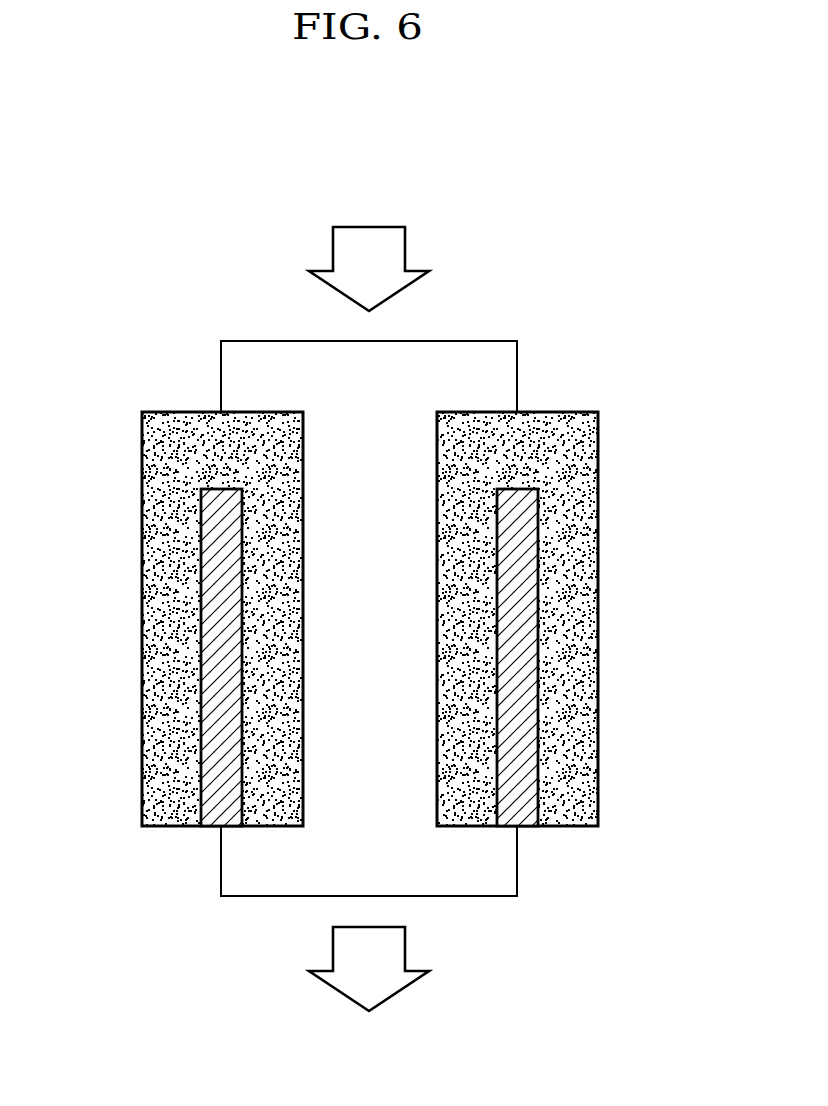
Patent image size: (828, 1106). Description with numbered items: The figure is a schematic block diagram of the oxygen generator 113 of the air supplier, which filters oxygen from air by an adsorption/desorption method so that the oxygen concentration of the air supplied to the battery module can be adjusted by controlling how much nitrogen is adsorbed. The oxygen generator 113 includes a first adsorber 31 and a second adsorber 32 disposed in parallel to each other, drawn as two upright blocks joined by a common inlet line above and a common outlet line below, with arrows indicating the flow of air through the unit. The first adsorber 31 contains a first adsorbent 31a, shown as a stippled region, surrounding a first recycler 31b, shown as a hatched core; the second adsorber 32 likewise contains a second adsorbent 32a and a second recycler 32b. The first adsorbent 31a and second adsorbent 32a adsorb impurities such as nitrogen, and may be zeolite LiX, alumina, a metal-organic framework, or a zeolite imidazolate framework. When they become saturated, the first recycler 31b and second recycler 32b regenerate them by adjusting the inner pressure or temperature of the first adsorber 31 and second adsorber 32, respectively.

The oxygen generator 113 is at (158, 252).
The first adsorber 31 is at (142, 618).
The first adsorbent 31a is at (162, 478).
The first recycler 31b is at (212, 558).
The second adsorber 32 is at (598, 618).
The second adsorbent 32a is at (572, 475).
The second recycler 32b is at (518, 550).